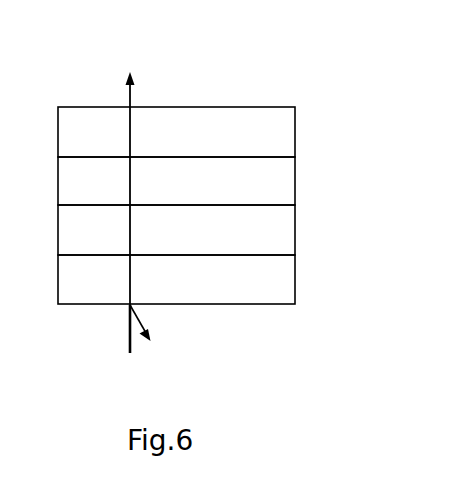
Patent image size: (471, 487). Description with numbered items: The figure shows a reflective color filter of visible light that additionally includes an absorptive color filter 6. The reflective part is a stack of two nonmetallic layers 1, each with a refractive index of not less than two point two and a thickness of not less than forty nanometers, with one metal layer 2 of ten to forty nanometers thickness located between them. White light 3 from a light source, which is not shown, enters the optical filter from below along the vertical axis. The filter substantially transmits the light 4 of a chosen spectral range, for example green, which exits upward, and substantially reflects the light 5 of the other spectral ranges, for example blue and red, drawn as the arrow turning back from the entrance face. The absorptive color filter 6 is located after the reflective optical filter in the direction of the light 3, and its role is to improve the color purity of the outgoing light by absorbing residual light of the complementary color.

The nonmetallic layer 1 is at (277, 182).
The metal layer 2 is at (277, 231).
The white light 3 is at (130, 357).
The transmitted light 4 is at (135, 162).
The reflected light 5 is at (153, 339).
The absorptive color filter 6 is at (277, 133).